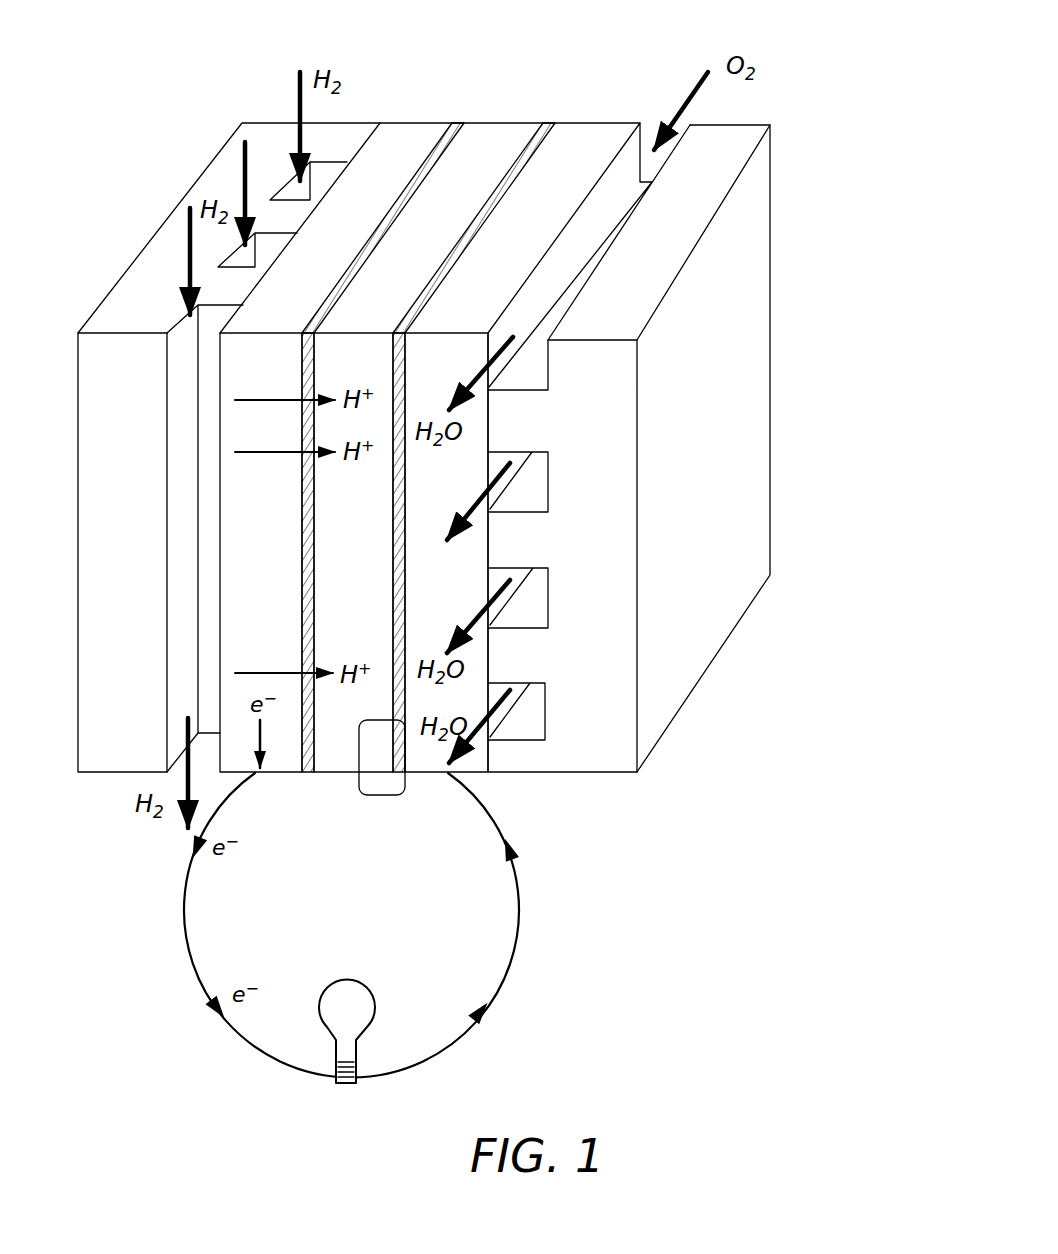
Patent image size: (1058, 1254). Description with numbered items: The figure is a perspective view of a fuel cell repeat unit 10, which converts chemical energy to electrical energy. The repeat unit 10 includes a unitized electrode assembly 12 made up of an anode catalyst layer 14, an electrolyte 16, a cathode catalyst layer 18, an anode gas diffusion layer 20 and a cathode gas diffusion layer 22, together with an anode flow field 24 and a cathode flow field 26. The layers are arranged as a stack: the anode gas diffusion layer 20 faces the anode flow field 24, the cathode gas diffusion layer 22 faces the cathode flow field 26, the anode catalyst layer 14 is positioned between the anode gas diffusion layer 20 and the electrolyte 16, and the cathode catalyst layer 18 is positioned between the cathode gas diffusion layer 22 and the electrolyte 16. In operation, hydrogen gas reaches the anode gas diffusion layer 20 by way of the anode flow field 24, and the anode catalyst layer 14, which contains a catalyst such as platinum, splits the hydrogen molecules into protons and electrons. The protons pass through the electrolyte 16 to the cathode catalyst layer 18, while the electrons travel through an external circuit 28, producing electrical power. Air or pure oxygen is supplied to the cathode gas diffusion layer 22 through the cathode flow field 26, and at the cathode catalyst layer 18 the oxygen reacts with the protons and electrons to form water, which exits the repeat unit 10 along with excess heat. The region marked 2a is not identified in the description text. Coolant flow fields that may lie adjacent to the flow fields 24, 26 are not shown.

The fuel cell repeat unit 10 is at (118, 135).
The unitized electrode assembly 12 is at (779, 107).
The anode catalyst layer 14 is at (395, 212).
The electrolyte 16 is at (503, 159).
The cathode catalyst layer 18 is at (465, 245).
The anode gas diffusion layer 20 is at (408, 159).
The cathode gas diffusion layer 22 is at (598, 159).
The anode flow field 24 is at (327, 172).
The cathode flow field 26 is at (533, 373).
The external circuit 28 is at (185, 932).
The membrane electrode assembly region 2a is at (388, 795).